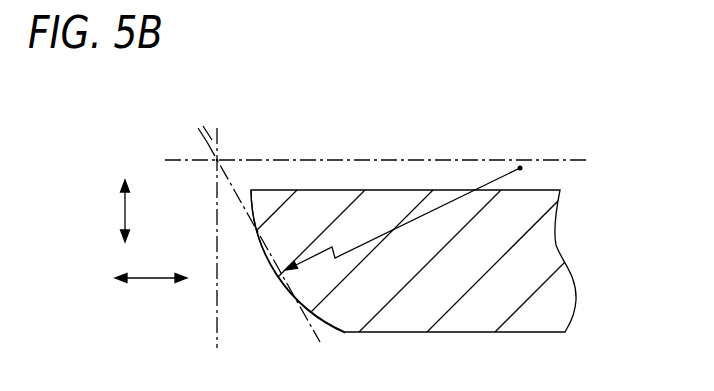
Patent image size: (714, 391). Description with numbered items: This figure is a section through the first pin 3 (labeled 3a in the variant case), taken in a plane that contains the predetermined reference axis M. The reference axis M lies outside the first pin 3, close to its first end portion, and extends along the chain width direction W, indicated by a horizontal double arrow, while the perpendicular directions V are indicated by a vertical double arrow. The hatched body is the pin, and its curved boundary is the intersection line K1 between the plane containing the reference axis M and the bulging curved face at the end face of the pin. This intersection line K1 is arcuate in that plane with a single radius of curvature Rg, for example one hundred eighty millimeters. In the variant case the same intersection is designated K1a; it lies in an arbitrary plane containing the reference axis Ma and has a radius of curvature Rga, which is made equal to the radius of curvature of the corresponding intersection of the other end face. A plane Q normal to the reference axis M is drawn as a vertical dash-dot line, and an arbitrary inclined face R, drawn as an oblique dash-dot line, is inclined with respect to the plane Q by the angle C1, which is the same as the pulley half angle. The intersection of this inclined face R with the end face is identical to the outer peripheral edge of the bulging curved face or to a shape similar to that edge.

The first pin 3 is at (423, 247).
The surface of work 3a is at (600, 218).
The reference axis M is at (377, 108).
The reference axis Ma is at (568, 160).
The pulley half angle C1 is at (206, 130).
The plane normal to the reference axis Q is at (218, 138).
The intersection line K1 is at (263, 259).
The intersection K1a is at (285, 282).
The inclined face R is at (246, 194).
The radius of curvature Rg is at (406, 170).
The radius of curvature Rga is at (498, 177).
The perpendicular directions V is at (125, 211).
The chain width direction W is at (150, 278).